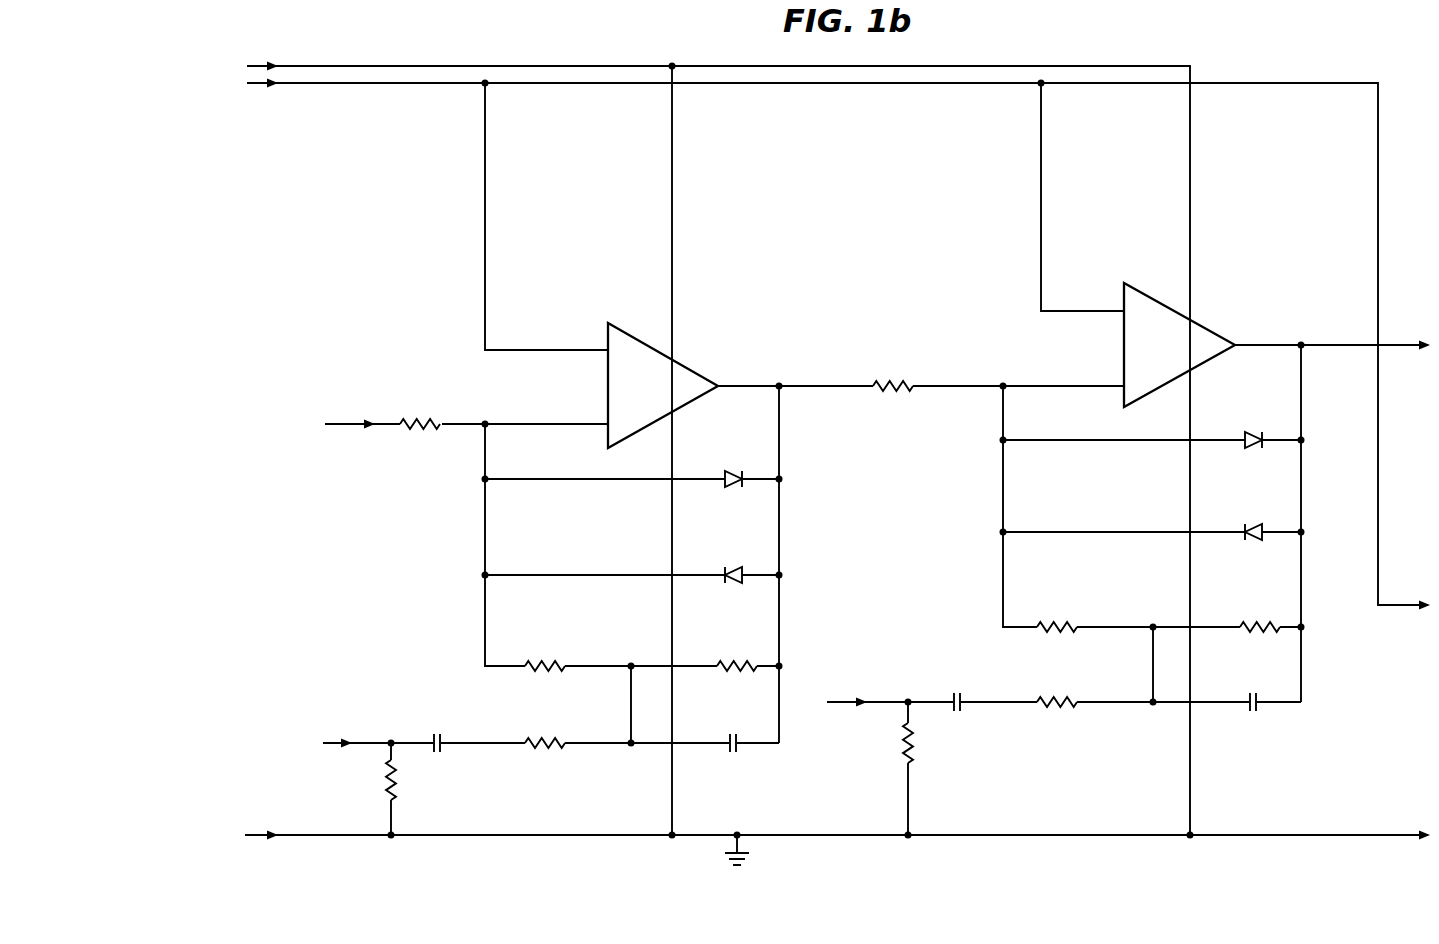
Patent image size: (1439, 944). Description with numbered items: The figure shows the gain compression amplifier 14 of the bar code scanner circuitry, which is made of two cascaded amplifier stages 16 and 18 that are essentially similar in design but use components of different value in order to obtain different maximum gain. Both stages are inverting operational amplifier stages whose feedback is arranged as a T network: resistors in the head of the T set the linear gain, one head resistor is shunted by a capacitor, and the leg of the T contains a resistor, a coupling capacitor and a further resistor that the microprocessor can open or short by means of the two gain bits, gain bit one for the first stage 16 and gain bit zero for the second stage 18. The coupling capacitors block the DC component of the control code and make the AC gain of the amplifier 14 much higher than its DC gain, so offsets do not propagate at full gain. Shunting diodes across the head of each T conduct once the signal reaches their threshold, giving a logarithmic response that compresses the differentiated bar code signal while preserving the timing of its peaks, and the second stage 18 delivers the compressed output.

The gain compression amplifier 14 is at (884, 209).
The first amplifier stage 16 is at (644, 292).
The second amplifier stage 18 is at (1234, 282).